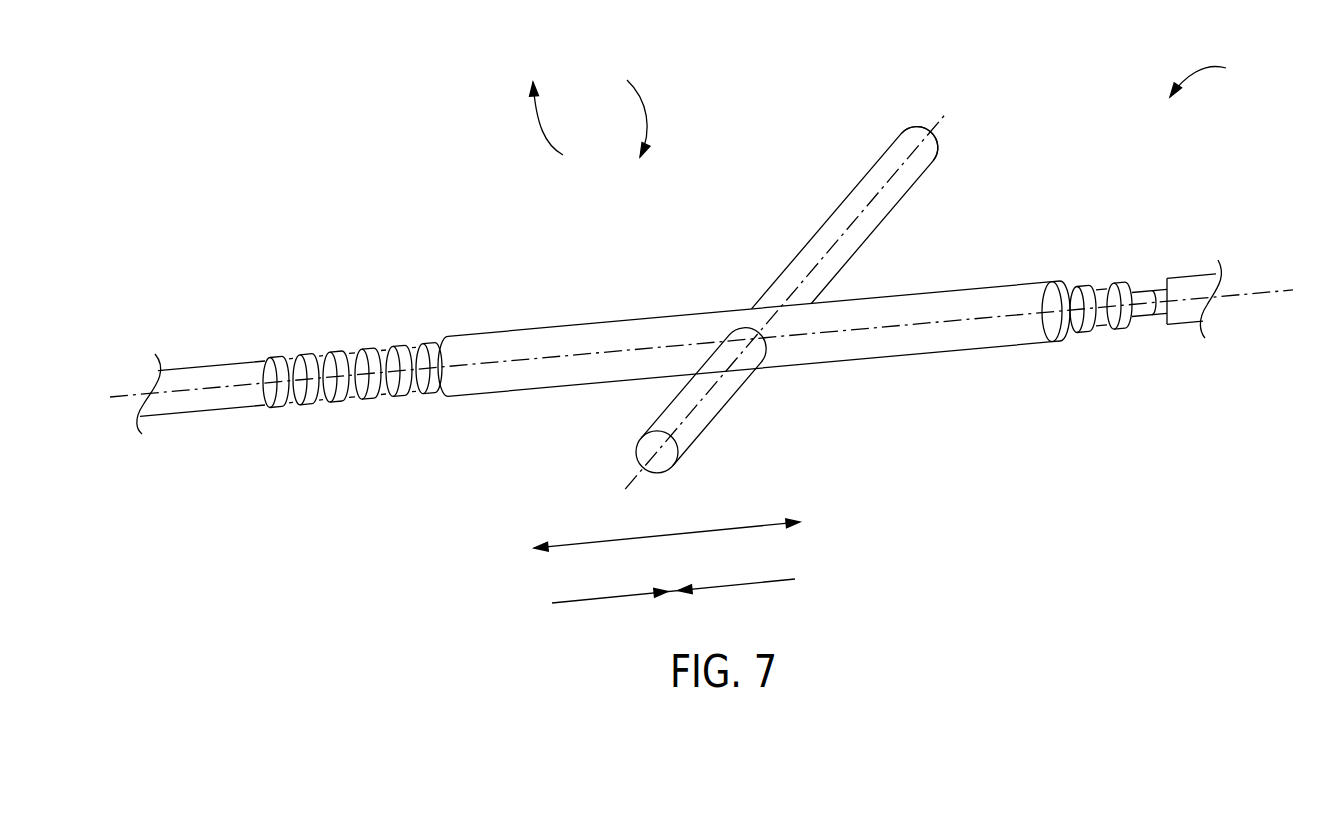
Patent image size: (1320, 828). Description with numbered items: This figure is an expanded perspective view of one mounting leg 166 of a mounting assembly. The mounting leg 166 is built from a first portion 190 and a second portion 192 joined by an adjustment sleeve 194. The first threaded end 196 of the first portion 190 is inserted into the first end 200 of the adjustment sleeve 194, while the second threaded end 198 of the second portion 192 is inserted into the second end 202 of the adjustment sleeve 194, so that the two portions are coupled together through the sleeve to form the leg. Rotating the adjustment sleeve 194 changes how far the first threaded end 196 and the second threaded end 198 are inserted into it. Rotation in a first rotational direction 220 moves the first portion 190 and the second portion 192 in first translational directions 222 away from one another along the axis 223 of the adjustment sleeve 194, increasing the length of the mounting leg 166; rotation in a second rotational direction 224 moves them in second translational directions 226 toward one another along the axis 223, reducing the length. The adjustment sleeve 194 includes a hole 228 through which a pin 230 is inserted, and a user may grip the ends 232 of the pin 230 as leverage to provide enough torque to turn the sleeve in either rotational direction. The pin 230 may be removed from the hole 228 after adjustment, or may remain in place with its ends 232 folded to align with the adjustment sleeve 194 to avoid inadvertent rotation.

The mounting leg 166 is at (1218, 75).
The first portion 190 is at (1178, 285).
The second portion 192 is at (205, 400).
The adjustment sleeve 194 is at (532, 380).
The first threaded end 196 is at (1098, 322).
The second threaded end 198 is at (318, 362).
The first end 200 is at (1043, 297).
The second end 202 is at (437, 342).
The first rotational direction 220 is at (541, 131).
The first translational directions 222 is at (668, 532).
The axis 223 is at (1253, 295).
The second rotational direction 224 is at (648, 111).
The second translational directions 226 is at (605, 598).
The hole 228 is at (757, 355).
The pin 230 is at (791, 272).
The ends 232 is at (890, 147).